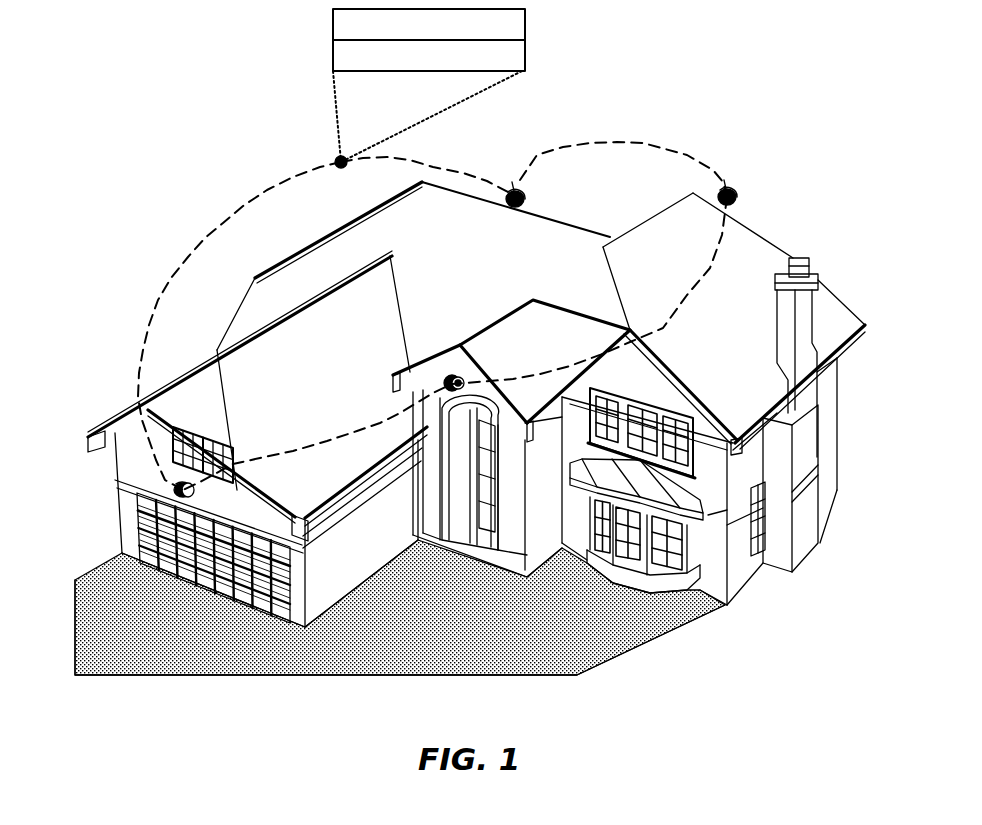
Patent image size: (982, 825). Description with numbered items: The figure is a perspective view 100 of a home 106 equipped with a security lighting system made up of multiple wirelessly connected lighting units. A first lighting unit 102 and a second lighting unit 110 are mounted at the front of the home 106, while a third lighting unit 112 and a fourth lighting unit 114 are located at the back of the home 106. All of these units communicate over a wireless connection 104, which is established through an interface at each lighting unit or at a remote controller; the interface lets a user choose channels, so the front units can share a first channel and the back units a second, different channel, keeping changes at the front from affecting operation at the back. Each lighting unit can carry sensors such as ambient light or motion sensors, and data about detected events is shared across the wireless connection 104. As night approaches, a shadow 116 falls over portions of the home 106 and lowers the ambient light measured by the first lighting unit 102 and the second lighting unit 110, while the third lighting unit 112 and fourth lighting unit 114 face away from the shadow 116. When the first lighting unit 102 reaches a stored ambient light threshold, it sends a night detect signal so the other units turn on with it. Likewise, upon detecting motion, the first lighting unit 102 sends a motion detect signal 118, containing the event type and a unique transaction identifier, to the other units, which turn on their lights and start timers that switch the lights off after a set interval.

The perspective view 100 is at (190, 115).
The first lighting unit 102 is at (527, 194).
The wireless connection 104 is at (205, 228).
The home 106 is at (466, 282).
The second lighting unit 110 is at (458, 378).
The third lighting unit 112 is at (682, 152).
The fourth lighting unit 114 is at (740, 193).
The shadow 116 is at (452, 617).
The motion detect signal 118 is at (336, 160).